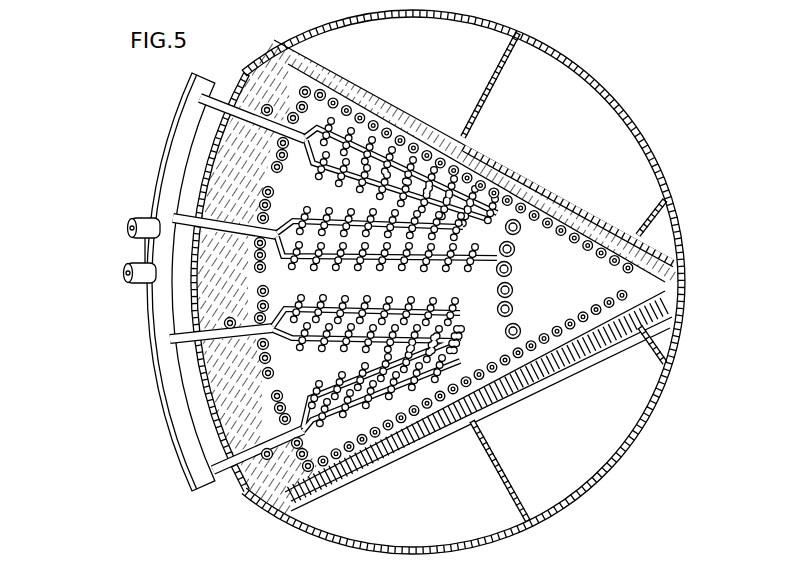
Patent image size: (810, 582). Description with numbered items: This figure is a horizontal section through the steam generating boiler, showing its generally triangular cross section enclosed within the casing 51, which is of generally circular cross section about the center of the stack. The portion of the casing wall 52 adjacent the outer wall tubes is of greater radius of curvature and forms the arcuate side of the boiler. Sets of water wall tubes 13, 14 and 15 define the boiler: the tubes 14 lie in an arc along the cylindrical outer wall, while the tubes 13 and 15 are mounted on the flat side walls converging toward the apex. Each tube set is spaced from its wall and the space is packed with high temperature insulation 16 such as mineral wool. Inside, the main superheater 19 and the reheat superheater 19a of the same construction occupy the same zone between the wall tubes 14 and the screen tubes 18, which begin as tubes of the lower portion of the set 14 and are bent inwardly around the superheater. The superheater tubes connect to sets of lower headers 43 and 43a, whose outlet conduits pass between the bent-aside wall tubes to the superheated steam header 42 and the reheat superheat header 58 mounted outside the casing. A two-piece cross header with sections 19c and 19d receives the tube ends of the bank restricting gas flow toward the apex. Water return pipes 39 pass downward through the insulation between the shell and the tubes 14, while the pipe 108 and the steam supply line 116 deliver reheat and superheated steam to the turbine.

The water wall tubes 13 is at (556, 314).
The water wall tubes 14 is at (274, 170).
The water wall tubes 15 is at (560, 237).
The high temperature insulation 16 is at (366, 88).
The screen tubes 18 is at (513, 309).
The superheater 19 is at (322, 375).
The reheat superheater 19a is at (333, 200).
The cross header section 19c is at (495, 238).
The cross header section 19d is at (482, 258).
The water return pipes 39 is at (262, 105).
The superheated steam header 42 is at (172, 409).
The lower headers 43 is at (186, 343).
The lower headers 43a is at (227, 92).
The casing 51 is at (502, 537).
The casing wall portion 52 is at (210, 152).
The reheat superheat header 58 is at (152, 210).
The pipe 108 is at (147, 250).
The steam supply line 116 is at (130, 285).